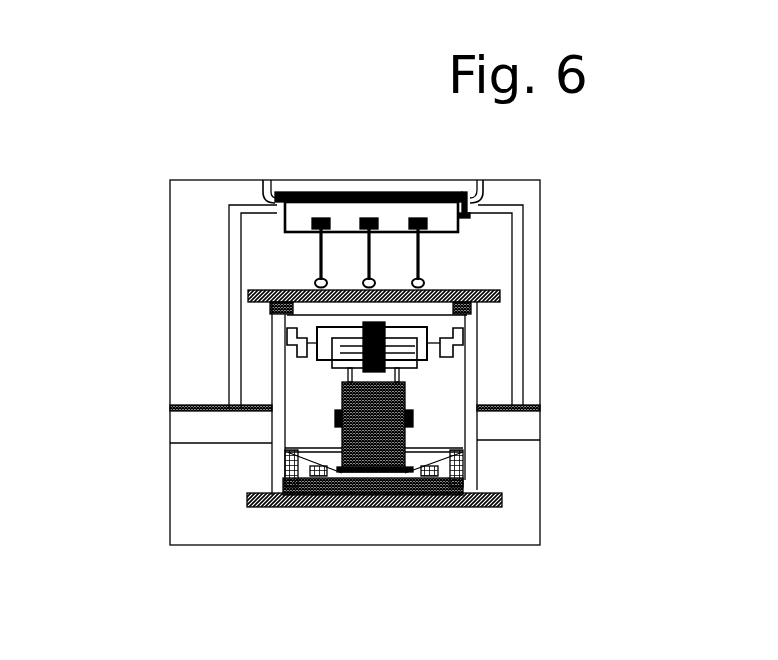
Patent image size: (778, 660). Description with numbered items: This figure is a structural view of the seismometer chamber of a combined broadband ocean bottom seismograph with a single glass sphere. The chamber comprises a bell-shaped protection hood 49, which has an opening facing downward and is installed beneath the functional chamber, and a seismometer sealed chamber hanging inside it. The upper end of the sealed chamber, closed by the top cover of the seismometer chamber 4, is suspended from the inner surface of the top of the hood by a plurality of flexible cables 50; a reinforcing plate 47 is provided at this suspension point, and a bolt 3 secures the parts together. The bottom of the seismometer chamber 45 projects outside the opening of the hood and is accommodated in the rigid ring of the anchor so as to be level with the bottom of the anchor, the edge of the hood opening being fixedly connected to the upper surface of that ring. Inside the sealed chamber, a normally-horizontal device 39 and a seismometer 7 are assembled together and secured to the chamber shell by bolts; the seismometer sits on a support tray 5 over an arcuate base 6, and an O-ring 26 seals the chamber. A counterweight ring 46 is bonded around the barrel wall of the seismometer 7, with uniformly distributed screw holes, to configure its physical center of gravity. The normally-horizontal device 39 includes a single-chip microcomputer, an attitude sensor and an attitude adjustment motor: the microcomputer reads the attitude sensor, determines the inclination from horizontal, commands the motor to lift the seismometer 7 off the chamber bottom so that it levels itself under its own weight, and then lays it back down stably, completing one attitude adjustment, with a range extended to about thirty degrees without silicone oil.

The bolt 3 is at (263, 183).
The top cover of the seismometer chamber 4 is at (282, 290).
The support tray 5 is at (272, 398).
The arcuate base 6 is at (270, 507).
The seismometer 7 is at (335, 447).
The O-ring 26 is at (285, 488).
The normally-horizontal device 39 is at (423, 343).
The bottom of the seismometer chamber 45 is at (283, 495).
The counterweight ring 46 is at (340, 414).
The reinforcing plate 47 is at (485, 178).
The protection hood 49 is at (527, 322).
The cable 50 is at (317, 250).